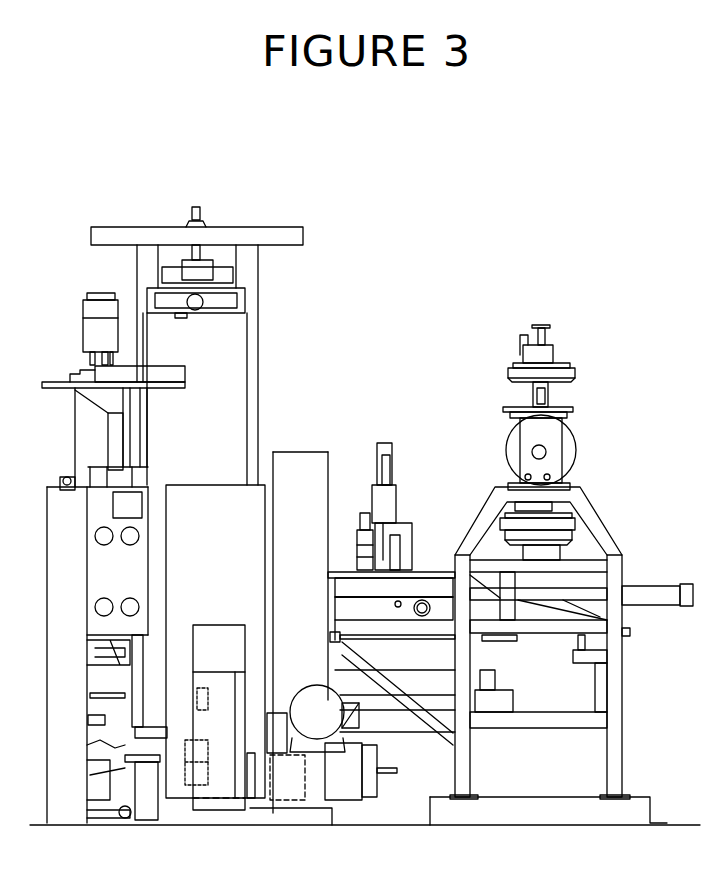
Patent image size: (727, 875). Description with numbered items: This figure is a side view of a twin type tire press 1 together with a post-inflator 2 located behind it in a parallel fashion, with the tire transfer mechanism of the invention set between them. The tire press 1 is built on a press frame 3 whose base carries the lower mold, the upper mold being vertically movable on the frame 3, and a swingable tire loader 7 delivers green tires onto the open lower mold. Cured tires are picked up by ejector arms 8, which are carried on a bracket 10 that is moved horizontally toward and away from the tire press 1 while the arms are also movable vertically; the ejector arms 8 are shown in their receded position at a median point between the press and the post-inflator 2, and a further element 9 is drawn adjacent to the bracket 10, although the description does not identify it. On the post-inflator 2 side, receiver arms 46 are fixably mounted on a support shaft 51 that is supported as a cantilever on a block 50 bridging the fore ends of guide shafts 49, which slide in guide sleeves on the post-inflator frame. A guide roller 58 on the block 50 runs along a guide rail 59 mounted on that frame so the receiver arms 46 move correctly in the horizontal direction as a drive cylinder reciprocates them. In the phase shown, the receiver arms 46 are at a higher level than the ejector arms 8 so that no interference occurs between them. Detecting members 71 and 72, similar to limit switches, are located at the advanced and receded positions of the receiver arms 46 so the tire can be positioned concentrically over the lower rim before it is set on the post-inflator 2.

The tire press 1 is at (262, 360).
The post-inflator 2 is at (600, 508).
The press frame 3 is at (283, 237).
The swingable tire loader 7 is at (50, 382).
The ejector arms 8 is at (428, 597).
The tower body 9 is at (365, 477).
The bracket 10 is at (395, 470).
The receiver arms 46 is at (352, 585).
The guide shafts 49 is at (420, 600).
The block 50 is at (328, 575).
The support shaft 51 is at (328, 588).
The guide roller 58 is at (330, 652).
The guide rail 59 is at (335, 642).
The detecting member 71 is at (330, 635).
The detecting member 72 is at (490, 641).